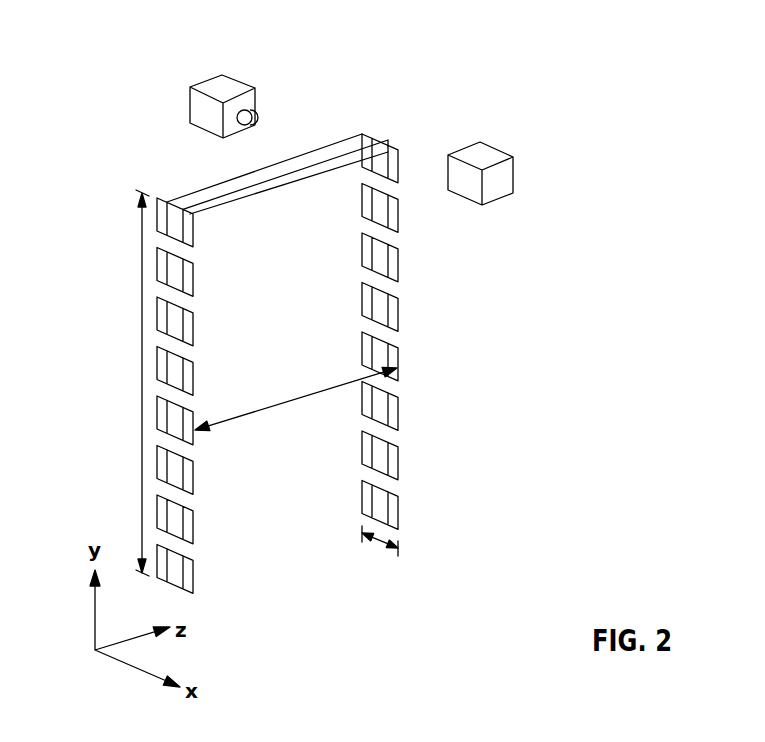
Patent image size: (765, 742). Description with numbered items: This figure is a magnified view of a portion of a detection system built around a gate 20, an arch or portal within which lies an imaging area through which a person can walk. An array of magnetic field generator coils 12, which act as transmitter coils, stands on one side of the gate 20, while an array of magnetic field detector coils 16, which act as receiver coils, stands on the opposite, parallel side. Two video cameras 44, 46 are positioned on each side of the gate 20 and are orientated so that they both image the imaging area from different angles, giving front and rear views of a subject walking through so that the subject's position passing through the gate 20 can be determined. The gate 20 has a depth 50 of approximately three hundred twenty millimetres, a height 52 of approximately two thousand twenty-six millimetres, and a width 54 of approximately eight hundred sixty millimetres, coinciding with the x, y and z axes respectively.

The magnetic field generator coils 12 is at (193, 230).
The magnetic field detector coils 16 is at (398, 215).
The gate 20 is at (325, 160).
The camera 44 is at (241, 82).
The camera 46 is at (495, 147).
The depth 50 is at (378, 542).
The height 52 is at (141, 410).
The width 54 is at (273, 408).